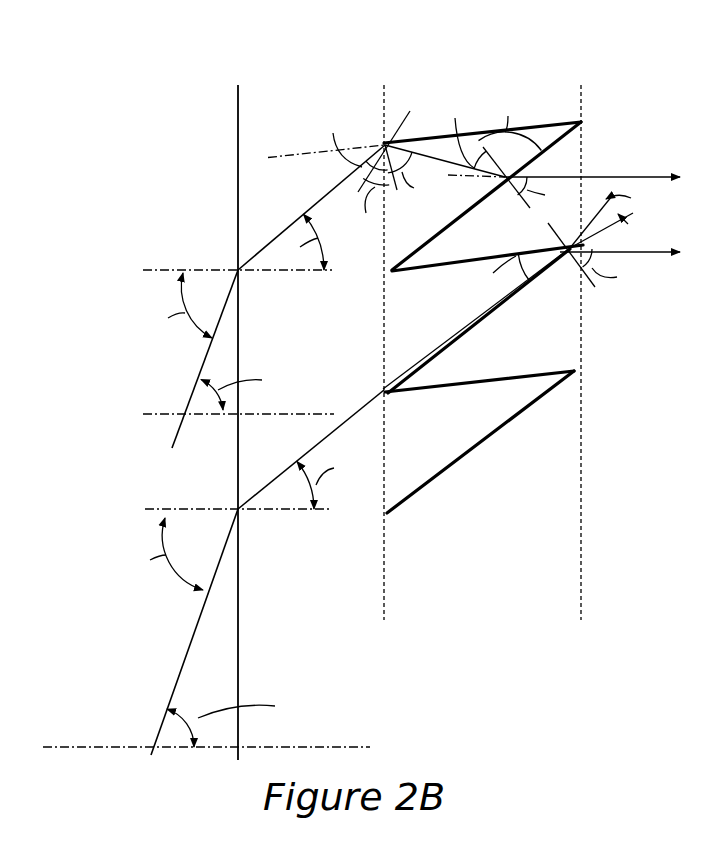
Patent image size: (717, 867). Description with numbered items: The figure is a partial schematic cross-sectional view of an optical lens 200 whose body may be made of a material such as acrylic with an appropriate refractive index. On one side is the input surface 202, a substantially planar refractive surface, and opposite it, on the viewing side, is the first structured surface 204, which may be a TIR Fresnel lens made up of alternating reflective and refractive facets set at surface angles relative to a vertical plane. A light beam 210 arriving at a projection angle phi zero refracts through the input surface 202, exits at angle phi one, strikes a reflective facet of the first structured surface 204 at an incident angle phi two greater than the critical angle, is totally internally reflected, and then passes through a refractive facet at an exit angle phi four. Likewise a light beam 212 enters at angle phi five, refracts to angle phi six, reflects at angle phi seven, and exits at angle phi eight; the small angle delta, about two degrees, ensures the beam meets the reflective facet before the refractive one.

The optical lens 200 is at (288, 48).
The input surface 202 is at (237, 167).
The first structured surface 204 is at (554, 88).
The light beam 210 is at (178, 430).
The light beam 212 is at (180, 680).